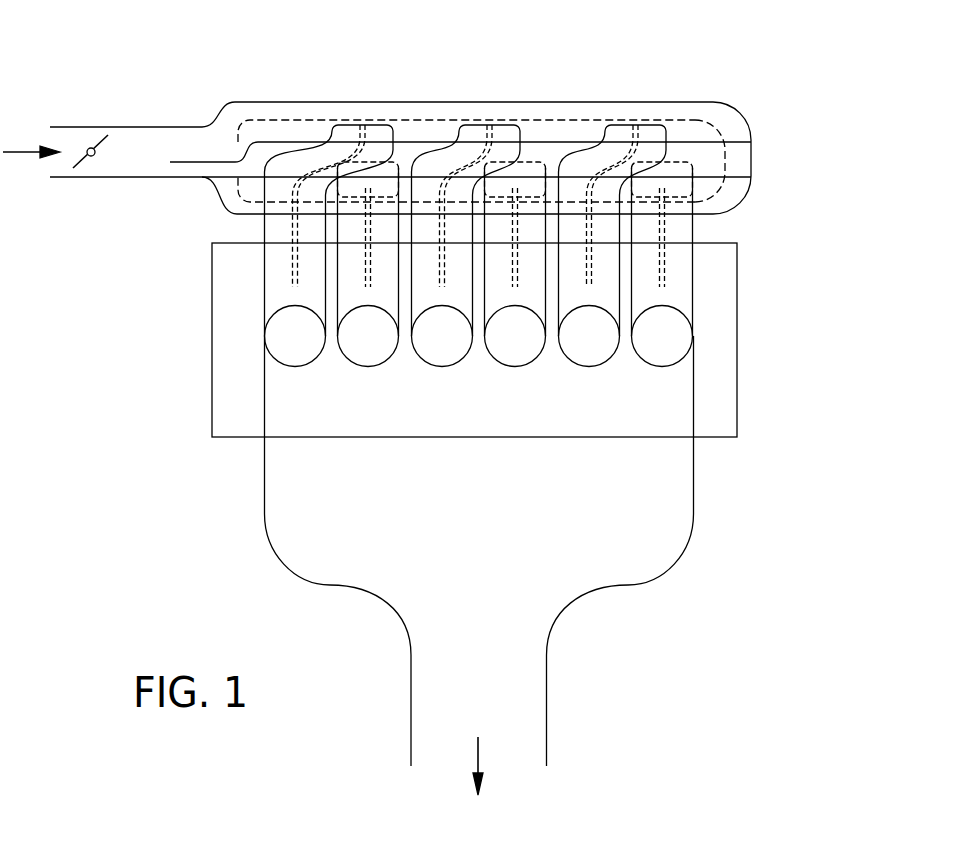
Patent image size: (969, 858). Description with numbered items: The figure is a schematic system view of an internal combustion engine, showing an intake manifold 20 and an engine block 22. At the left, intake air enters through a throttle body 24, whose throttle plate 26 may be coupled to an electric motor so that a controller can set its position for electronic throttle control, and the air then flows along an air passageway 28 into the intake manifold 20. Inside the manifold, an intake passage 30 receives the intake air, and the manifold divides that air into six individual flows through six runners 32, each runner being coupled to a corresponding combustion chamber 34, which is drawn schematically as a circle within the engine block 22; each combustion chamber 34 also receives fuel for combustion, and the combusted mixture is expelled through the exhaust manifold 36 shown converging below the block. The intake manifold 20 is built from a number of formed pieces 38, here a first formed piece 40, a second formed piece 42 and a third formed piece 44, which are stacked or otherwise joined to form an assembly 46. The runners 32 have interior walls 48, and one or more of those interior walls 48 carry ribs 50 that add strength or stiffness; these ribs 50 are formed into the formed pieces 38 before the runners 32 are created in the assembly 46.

The intake manifold 20 is at (645, 102).
The engine block 22 is at (738, 350).
The throttle body 24 is at (115, 105).
The throttle plate 26 is at (75, 169).
The air passageway 28 is at (123, 164).
The intake passage 30 is at (417, 118).
The runners 32 is at (264, 295).
The combustion chambers 34 is at (282, 348).
The exhaust manifold 36 is at (466, 541).
The formed pieces 38 is at (748, 108).
The first formed piece 40 is at (742, 198).
The second formed piece 42 is at (748, 158).
The third formed piece 44 is at (747, 128).
The assembly 46 is at (712, 77).
The interior walls 48 is at (520, 127).
The ribs 50 is at (345, 123).